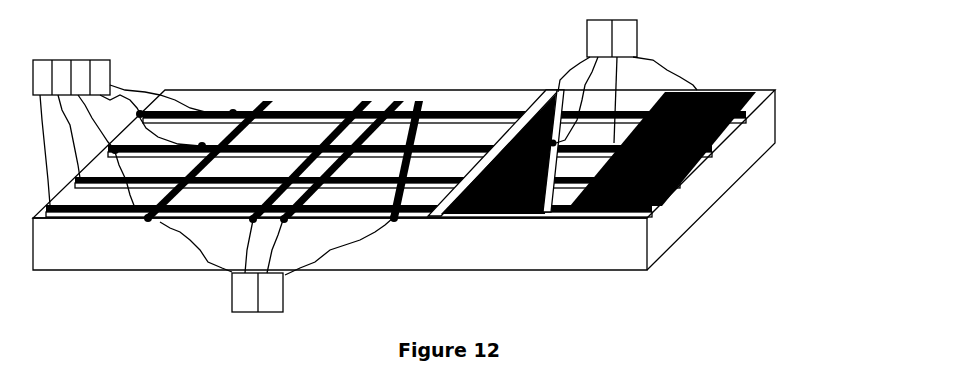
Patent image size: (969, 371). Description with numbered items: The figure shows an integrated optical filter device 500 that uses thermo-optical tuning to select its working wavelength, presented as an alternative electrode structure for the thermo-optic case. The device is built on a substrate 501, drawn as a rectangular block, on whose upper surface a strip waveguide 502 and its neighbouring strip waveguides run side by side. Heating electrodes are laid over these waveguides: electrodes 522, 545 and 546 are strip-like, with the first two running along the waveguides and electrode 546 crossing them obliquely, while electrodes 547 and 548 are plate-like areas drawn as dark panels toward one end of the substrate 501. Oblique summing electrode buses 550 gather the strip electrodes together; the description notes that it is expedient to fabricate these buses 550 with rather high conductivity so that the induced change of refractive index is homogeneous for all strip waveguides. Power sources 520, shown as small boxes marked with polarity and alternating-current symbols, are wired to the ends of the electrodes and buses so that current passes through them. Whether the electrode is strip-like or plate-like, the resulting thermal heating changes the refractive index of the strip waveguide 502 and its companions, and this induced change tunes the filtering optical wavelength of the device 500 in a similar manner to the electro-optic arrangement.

The integrated optical filter device 500 is at (499, 50).
The substrate 501 is at (697, 214).
The strip waveguide 502 is at (497, 114).
The power source 520 is at (110, 62).
The strip-like electrode 522 is at (150, 138).
The strip-like electrode 545 is at (302, 112).
The strip-like electrode 546 is at (365, 100).
The plate-like electrode 547 is at (482, 213).
The plate-like electrode 548 is at (587, 211).
The summing electrode bus 550 is at (494, 148).